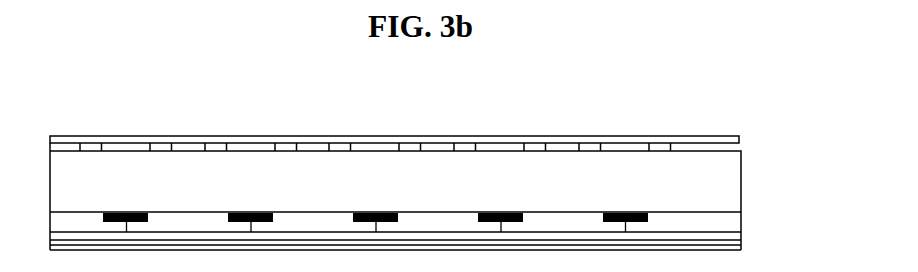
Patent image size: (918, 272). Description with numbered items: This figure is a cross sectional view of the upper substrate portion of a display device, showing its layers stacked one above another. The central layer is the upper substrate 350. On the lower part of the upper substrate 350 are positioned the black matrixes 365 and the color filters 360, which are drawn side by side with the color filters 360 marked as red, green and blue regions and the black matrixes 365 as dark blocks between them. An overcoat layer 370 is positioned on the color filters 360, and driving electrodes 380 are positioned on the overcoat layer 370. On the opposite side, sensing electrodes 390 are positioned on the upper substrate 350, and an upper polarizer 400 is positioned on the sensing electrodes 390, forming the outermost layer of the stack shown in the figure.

The upper substrate 350 is at (741, 180).
The color filters 360 is at (736, 223).
The black matrixes 365 is at (638, 211).
The overcoat layer 370 is at (735, 237).
The driving electrodes 380 is at (737, 247).
The sensing electrodes 390 is at (660, 146).
The upper polarizer 400 is at (739, 140).